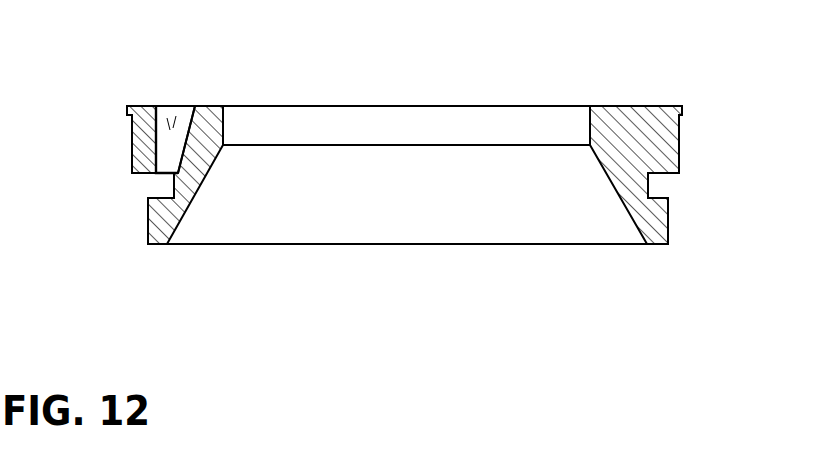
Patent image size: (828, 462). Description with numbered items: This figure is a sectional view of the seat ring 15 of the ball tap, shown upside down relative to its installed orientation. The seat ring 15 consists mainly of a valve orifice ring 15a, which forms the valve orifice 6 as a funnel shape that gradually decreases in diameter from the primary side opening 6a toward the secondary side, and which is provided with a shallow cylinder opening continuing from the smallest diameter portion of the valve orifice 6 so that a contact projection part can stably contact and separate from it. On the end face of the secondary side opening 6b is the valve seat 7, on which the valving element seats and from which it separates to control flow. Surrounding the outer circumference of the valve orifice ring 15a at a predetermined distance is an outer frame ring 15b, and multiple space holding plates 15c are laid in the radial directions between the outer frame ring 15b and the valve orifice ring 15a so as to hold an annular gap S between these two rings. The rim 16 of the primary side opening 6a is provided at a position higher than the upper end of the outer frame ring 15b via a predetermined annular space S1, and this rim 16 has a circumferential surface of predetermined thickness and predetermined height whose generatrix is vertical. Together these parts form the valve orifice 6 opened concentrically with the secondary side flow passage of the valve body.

The valve orifice 6 is at (445, 137).
The primary side opening 6a is at (246, 236).
The secondary side opening 6b is at (532, 113).
The valve seat 7 is at (242, 106).
The seat ring 15 is at (679, 160).
The valve orifice ring 15a is at (148, 231).
The outer frame ring 15b is at (127, 106).
The space holding plates 15c is at (176, 118).
The rim 16 is at (668, 227).
The annular gap S is at (157, 106).
The annular space S1 is at (170, 182).